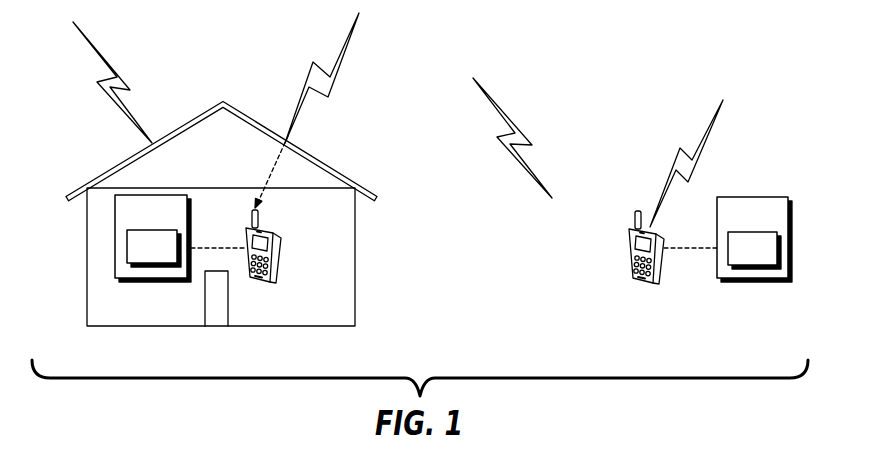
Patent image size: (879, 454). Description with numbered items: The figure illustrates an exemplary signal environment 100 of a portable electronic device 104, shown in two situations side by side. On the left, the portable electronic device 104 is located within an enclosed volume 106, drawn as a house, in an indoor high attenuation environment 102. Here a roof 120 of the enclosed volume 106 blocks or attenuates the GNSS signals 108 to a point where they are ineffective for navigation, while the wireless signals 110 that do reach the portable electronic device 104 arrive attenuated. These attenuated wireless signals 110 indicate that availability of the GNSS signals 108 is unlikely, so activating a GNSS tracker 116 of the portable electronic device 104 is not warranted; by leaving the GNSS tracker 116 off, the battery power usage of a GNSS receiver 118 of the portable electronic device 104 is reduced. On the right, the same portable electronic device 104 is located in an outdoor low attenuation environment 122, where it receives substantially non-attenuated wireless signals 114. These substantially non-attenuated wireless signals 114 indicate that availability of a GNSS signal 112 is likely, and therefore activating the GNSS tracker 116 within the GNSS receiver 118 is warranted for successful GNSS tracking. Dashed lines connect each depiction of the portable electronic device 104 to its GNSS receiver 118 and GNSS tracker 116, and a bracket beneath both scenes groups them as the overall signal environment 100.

The signal environment 100 is at (442, 24).
The indoor high attenuation environment 102 is at (78, 353).
The portable electronic device 104 is at (280, 265).
The enclosed volume 106 is at (97, 250).
The GNSS signals 108 is at (118, 70).
The wireless signals 110 is at (340, 45).
The GNSS signal 112 is at (510, 115).
The substantially non-attenuated wireless signals 114 is at (705, 130).
The GNSS tracker 116 is at (454, 249).
The GNSS receiver 118 is at (453, 238).
The roof 120 is at (148, 163).
The outdoor low attenuation environment 122 is at (508, 352).